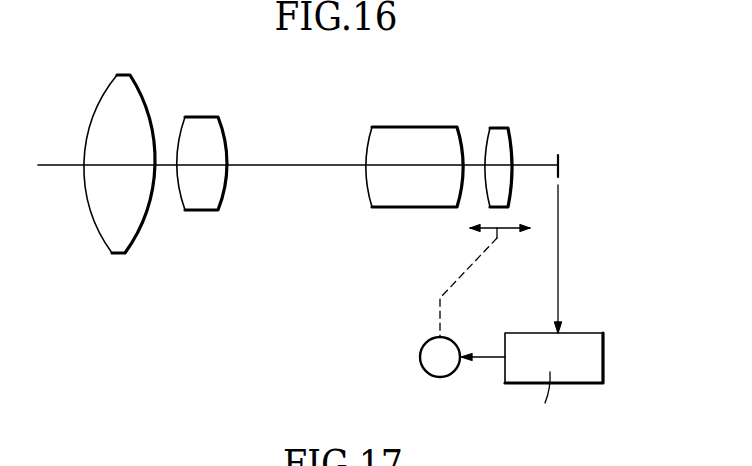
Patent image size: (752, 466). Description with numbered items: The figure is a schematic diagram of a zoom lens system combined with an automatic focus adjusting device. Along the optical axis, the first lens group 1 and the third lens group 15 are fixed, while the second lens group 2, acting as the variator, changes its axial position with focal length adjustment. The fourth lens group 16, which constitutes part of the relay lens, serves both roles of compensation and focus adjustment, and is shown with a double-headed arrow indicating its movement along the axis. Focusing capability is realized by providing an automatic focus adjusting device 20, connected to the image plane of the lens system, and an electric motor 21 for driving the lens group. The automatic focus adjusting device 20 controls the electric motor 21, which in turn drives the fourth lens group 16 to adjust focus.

The first lens group 1 is at (138, 100).
The second lens group 2 is at (205, 117).
The third lens group 15 is at (418, 130).
The fourth lens group 16 is at (497, 129).
The automatic focus adjusting device 20 is at (573, 337).
The electric motor 21 is at (421, 356).